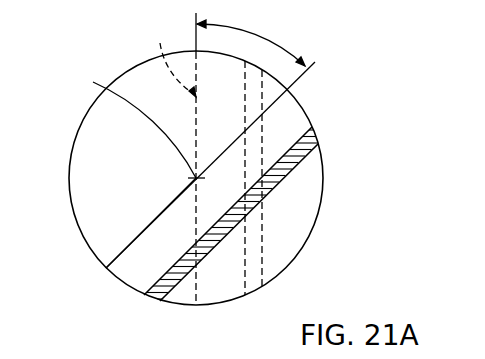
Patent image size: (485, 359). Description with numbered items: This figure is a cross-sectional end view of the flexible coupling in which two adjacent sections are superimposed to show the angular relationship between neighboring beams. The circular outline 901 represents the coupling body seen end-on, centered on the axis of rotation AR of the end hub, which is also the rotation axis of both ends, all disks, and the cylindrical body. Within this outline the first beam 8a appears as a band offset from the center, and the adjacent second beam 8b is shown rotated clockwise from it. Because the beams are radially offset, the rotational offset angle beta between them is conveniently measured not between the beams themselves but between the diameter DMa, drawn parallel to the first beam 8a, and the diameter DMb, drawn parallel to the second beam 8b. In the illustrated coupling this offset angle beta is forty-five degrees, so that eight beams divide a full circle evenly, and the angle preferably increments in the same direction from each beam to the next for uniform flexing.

The first beam 8a is at (255, 290).
The second beam 8b is at (160, 301).
The circular cross-section 901 is at (196, 205).
The diameter parallel to first beam DMa is at (164, 57).
The diameter parallel to second beam DMb is at (133, 238).
The axis of rotation AR is at (131, 123).
The rotational offset angle beta is at (251, 43).